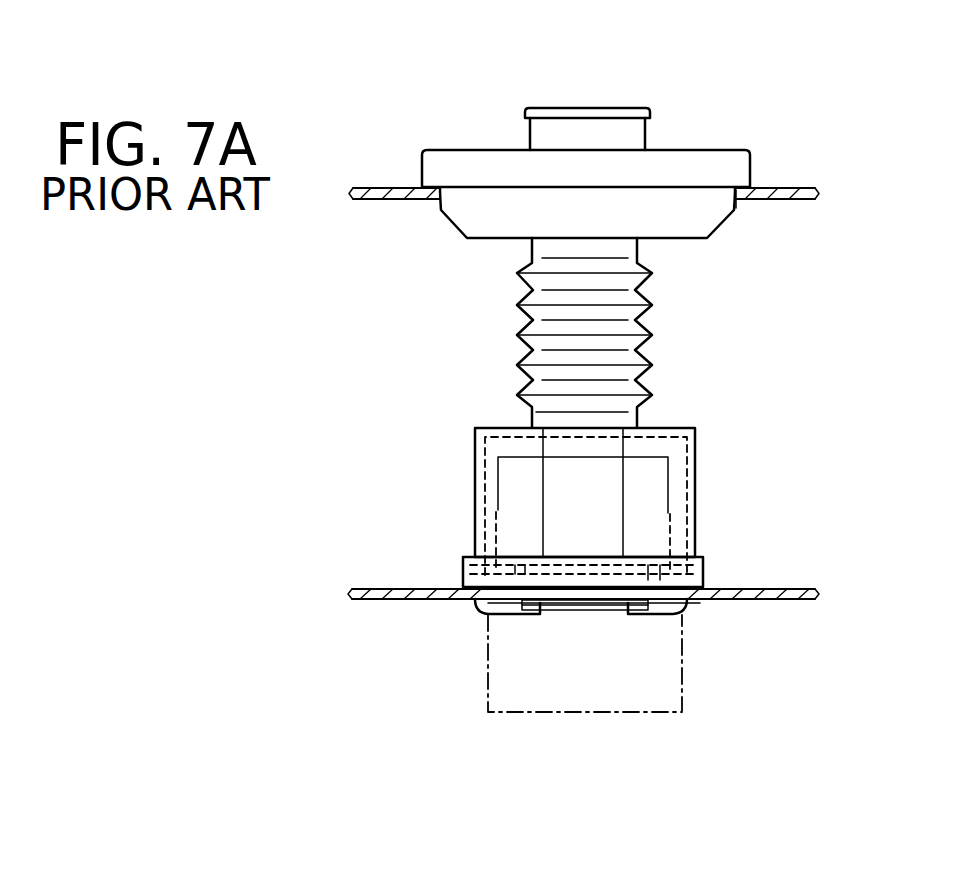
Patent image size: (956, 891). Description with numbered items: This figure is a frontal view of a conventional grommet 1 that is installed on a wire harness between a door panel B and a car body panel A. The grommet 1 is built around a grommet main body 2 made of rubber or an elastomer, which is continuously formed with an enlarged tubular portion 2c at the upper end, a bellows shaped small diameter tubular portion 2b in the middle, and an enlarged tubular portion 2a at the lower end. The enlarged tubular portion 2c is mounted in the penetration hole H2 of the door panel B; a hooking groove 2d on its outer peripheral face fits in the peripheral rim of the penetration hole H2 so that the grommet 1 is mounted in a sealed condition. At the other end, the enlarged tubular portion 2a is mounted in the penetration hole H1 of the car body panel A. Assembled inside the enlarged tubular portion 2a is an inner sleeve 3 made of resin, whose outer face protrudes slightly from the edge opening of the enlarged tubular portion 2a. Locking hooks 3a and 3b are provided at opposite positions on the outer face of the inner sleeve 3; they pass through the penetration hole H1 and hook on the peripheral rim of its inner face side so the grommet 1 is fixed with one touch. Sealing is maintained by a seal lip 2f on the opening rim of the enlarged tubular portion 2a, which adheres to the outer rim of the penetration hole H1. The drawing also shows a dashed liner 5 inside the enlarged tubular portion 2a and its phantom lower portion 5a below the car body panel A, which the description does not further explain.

The grommet 1 is at (422, 116).
The grommet main body 2 is at (718, 325).
The enlarged tubular portion 2a is at (696, 516).
The bellows shaped small diameter tubular portion 2b is at (648, 353).
The enlarged tubular portion 2c is at (398, 163).
The hooking groove 2d is at (439, 198).
The seal lip 2f is at (704, 588).
The inner sleeve 3 is at (537, 617).
The locking hook 3a is at (478, 610).
The locking hook 3b is at (688, 613).
The inner liner 5 is at (488, 514).
The lower portion of liner 5a is at (487, 710).
The car body panel A is at (420, 588).
The door panel B is at (776, 187).
The penetration hole H1 is at (677, 613).
The penetration hole H2 is at (737, 208).